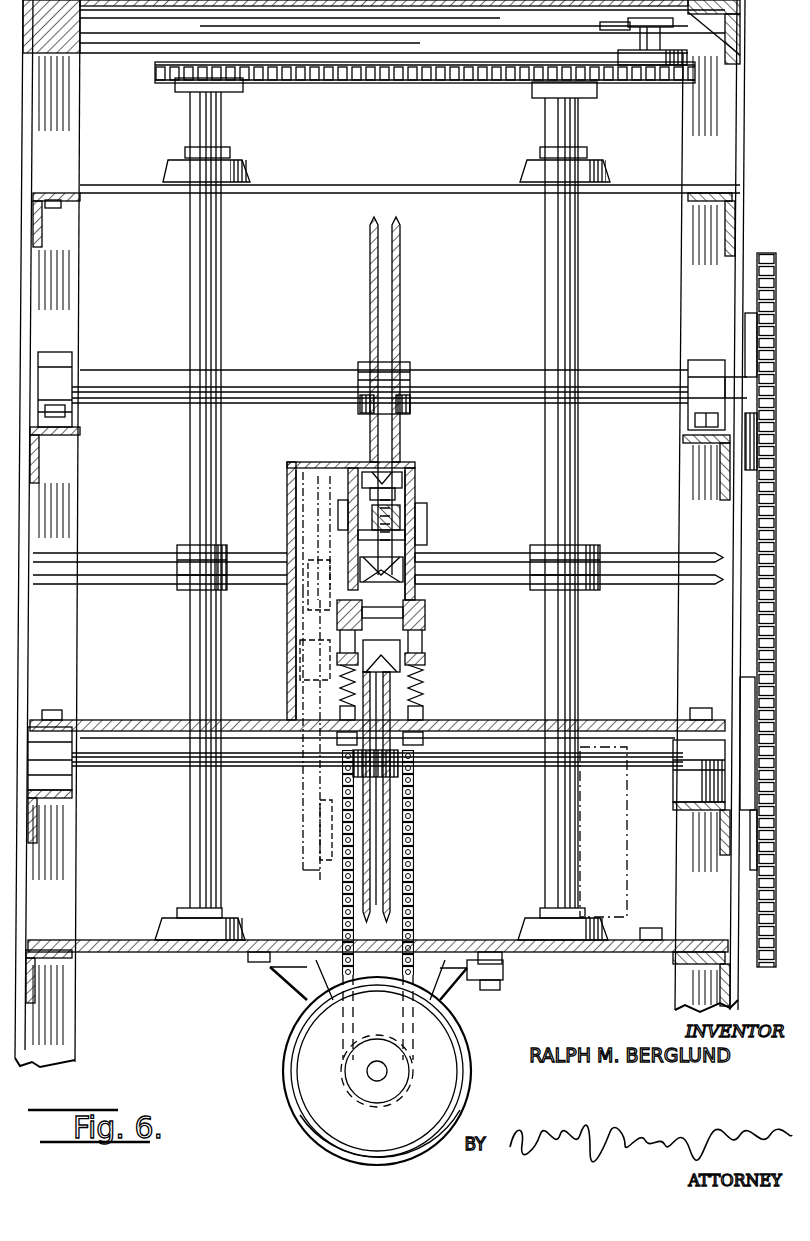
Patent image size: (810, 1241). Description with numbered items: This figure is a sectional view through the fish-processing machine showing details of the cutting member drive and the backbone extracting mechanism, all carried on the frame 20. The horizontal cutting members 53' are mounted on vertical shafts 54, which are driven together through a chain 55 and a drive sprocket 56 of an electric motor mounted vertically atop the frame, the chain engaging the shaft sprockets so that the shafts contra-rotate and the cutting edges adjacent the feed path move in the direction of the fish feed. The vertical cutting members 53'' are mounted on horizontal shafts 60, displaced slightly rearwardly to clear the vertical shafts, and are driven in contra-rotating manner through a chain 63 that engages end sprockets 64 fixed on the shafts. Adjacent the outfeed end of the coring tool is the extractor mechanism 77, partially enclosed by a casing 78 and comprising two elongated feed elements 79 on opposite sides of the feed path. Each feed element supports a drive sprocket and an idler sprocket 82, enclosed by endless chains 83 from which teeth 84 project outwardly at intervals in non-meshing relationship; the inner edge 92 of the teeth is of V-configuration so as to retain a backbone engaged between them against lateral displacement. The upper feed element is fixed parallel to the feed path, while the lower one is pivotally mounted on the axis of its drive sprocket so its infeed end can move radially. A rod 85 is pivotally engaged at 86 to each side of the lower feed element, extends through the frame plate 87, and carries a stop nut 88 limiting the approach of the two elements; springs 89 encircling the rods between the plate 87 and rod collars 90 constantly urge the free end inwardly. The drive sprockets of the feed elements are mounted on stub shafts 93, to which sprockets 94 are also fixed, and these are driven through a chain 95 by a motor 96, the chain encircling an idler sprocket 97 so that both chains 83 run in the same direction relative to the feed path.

The frame 20 is at (80, 998).
The horizontal cutting members 53' is at (378, 540).
The vertical cutting members 53'' is at (412, 569).
The vertical shafts 54 is at (222, 292).
The chain 55 is at (445, 85).
The drive sprocket 56 is at (673, 80).
The horizontal shafts 60 is at (315, 378).
The chain 63 is at (758, 598).
The end sprockets 64 is at (760, 316).
The extractor mechanism 77 is at (432, 478).
The casing 78 is at (418, 463).
The feed elements 79 is at (395, 512).
The idler sprocket 82 is at (420, 522).
The endless chains 83 is at (370, 480).
The teeth 84 is at (378, 485).
The rod 85 is at (425, 634).
The pivotal engagement 86 is at (425, 613).
The frame plate 87 is at (510, 720).
The stop nuts 88 is at (420, 745).
The springs 89 is at (425, 678).
The rod collars 90 is at (425, 661).
The inner edge 92 is at (390, 466).
The stub shafts 93 is at (287, 488).
The sprockets 94 is at (312, 500).
The chain 95 is at (303, 785).
The motor 96 is at (605, 892).
The idler sprocket 97 is at (290, 672).